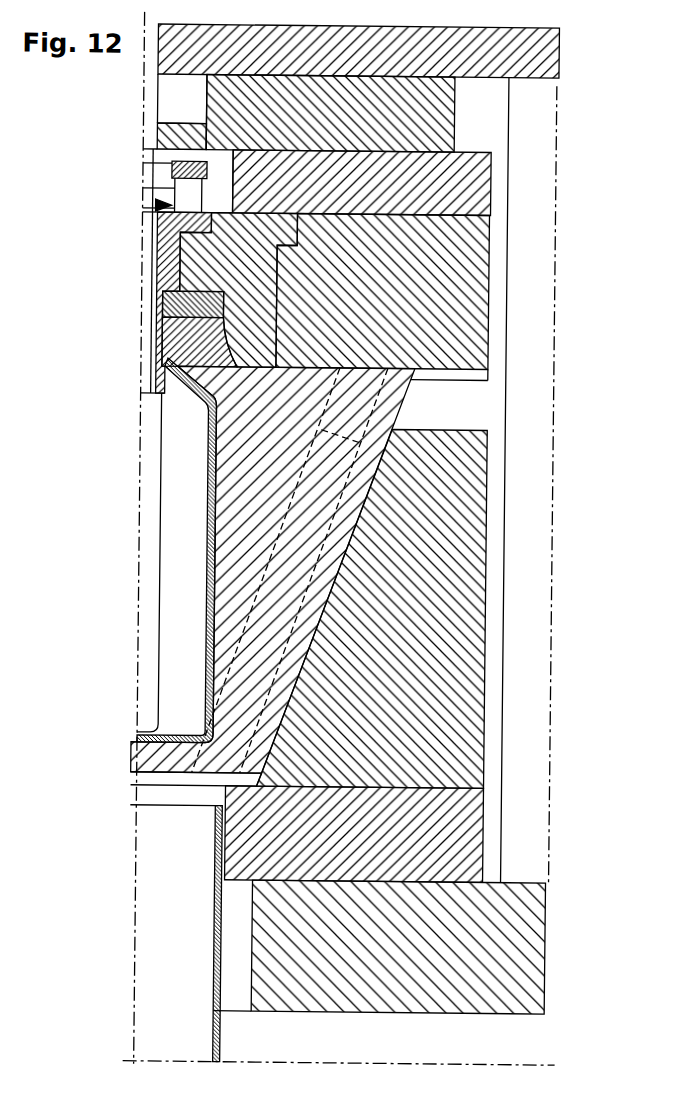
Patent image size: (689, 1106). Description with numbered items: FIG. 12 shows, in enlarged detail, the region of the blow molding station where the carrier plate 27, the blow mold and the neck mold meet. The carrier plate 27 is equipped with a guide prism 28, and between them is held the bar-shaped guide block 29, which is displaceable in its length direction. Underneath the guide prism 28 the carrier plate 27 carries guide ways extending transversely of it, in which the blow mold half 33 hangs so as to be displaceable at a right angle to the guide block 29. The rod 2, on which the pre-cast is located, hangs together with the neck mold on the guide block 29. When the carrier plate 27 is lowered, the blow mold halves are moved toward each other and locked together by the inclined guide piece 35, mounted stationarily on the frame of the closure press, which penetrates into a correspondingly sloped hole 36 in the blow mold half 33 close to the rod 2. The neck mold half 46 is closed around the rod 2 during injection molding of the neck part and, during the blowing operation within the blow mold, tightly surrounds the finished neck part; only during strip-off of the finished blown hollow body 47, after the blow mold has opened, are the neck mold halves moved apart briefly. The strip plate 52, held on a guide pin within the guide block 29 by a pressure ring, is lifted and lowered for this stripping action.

The rod 2 is at (139, 433).
The carrier plate 27 is at (456, 157).
The guide prism 28 is at (278, 278).
The guide block 29 is at (258, 258).
The mold half 33 is at (285, 478).
The inclined guide piece 35 is at (325, 538).
The sloped hole 36 is at (374, 406).
The mold half of the neck mold 46 is at (160, 338).
The finished blown hollow body 47 is at (207, 465).
The strip plate 52 is at (160, 304).